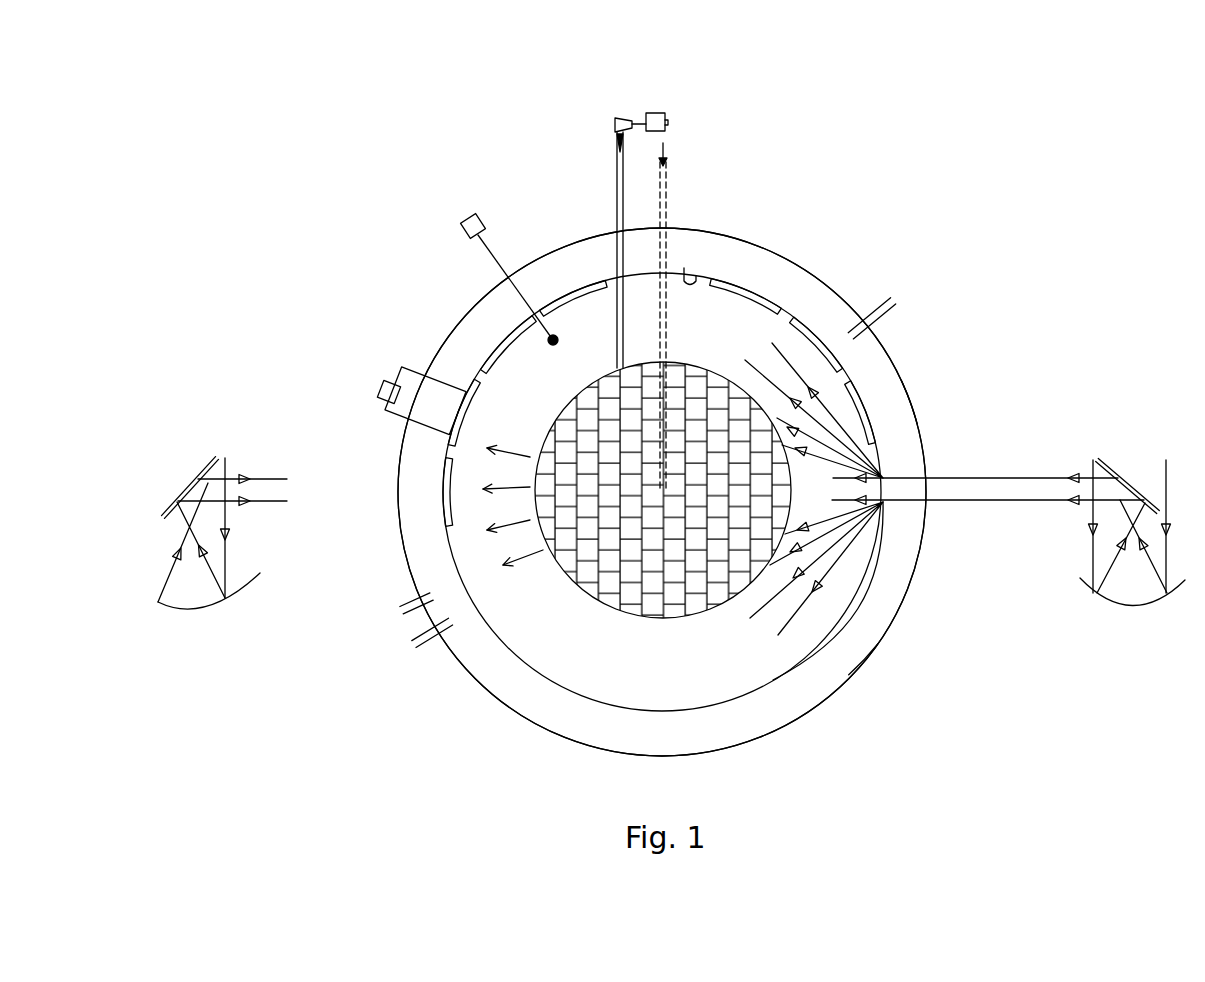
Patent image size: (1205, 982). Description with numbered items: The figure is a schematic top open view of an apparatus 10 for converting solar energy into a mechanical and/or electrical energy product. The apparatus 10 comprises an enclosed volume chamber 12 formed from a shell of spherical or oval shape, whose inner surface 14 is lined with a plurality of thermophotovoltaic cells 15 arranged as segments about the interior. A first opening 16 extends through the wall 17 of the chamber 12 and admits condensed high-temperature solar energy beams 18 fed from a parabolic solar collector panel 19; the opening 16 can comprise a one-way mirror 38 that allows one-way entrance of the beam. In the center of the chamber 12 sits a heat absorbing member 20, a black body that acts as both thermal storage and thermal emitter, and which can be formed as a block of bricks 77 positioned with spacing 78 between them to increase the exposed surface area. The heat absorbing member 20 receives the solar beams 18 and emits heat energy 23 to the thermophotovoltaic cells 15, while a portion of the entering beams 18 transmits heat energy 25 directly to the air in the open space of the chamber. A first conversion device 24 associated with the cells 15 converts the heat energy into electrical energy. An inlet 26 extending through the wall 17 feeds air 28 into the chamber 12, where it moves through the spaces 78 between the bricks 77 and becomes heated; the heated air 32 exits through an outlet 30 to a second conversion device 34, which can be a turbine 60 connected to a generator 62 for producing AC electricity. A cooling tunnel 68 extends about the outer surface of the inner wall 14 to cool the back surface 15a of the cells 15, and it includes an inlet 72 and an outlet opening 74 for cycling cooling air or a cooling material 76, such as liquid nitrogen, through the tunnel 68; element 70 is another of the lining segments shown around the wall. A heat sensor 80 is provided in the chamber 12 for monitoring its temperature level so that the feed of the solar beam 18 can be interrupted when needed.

The apparatus 10 is at (311, 185).
The enclosed volume chamber 12 is at (396, 500).
The inner surface 14 is at (685, 280).
The thermophotovoltaic cells 15 is at (755, 298).
The back surface 15a is at (493, 353).
The first opening 16 is at (957, 488).
The wall 17 is at (915, 398).
The solar energy beams 18 is at (1025, 475).
The parabolic solar collector panel 19 is at (1127, 615).
The heat absorbing member 20 is at (588, 432).
The heat energy 23 is at (507, 452).
The first conversion device 24 is at (378, 376).
The heat energy 25 is at (747, 620).
The inlet 26 is at (668, 182).
The air 28 is at (673, 150).
The outlet 30 is at (616, 218).
The heated air 32 is at (613, 149).
The second conversion device 34 is at (603, 114).
The one-way mirror 38 is at (893, 481).
The turbine 60 is at (628, 117).
The generator 62 is at (667, 117).
The cooling tunnel 68 is at (870, 637).
The wall segment 70 is at (793, 307).
The inlet 72 is at (882, 317).
The outlet opening 74 is at (425, 645).
The cooling material 76 is at (915, 297).
The bricks 77 is at (630, 605).
The spacing 78 is at (593, 580).
The heat sensor 80 is at (480, 213).